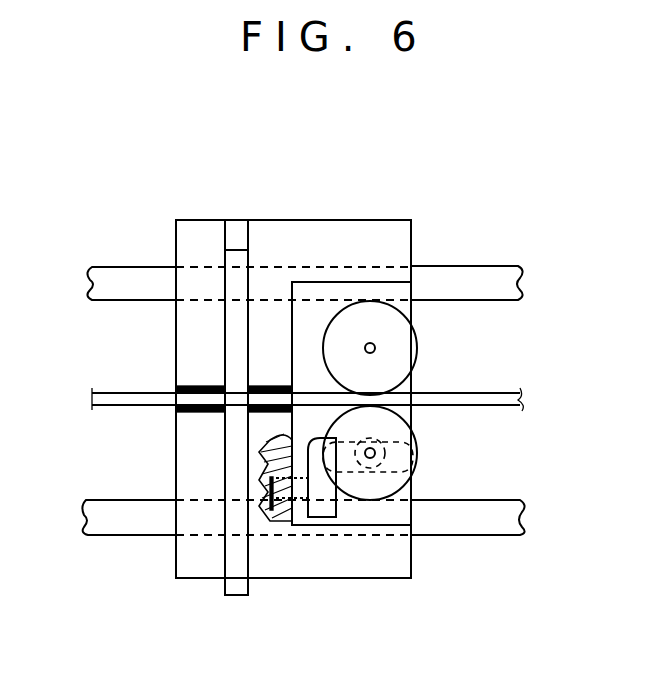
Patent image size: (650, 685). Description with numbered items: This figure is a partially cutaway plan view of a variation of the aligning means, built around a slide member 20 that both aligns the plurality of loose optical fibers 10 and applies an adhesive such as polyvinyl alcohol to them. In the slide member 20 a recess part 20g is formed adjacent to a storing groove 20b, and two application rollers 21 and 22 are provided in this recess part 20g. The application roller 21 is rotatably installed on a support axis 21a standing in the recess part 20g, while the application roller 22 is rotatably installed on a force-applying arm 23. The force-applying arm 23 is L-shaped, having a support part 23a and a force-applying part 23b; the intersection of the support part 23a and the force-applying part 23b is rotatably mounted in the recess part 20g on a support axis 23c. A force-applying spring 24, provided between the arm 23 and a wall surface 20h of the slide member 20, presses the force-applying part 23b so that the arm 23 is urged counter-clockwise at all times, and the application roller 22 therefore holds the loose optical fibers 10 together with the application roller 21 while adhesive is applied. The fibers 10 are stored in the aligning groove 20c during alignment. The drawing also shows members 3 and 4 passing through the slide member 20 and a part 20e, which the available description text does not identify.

The guide shaft 3 is at (105, 275).
The guide shaft 4 is at (478, 522).
The loose optical fibers 10 is at (503, 399).
The slide member 20 is at (288, 207).
The storing groove 20b is at (232, 548).
The aligning groove 20c is at (178, 396).
The vertical bar 20e is at (234, 312).
The recess part 20g is at (318, 318).
The wall surface 20h is at (272, 528).
The application roller 21 is at (417, 338).
The support axis 21a is at (376, 350).
The application roller 22 is at (419, 448).
The force-applying arm 23 is at (343, 517).
The support part 23a is at (413, 478).
The force-applying part 23b is at (321, 506).
The support axis 23c is at (262, 468).
The force-applying spring 24 is at (270, 498).